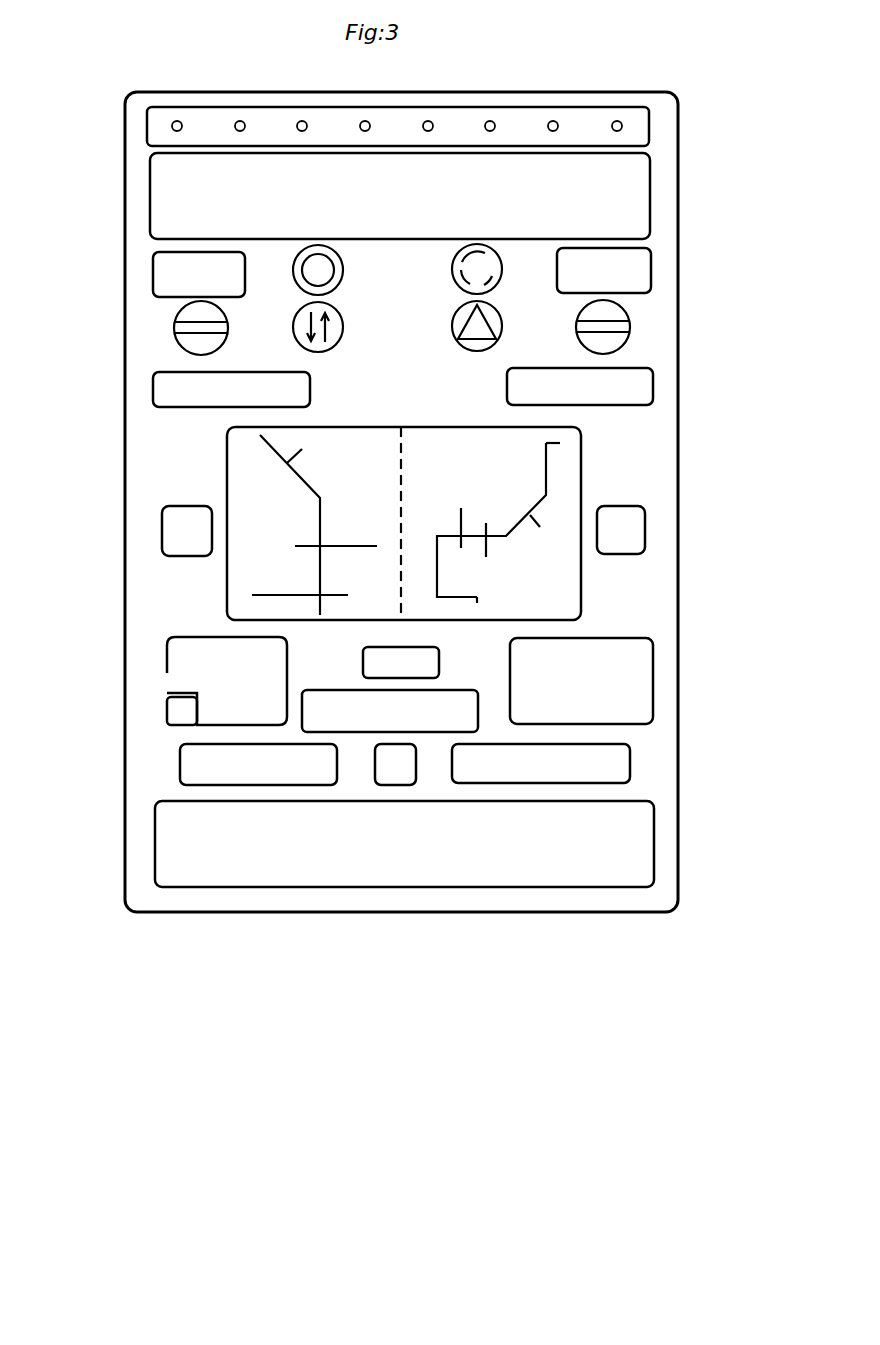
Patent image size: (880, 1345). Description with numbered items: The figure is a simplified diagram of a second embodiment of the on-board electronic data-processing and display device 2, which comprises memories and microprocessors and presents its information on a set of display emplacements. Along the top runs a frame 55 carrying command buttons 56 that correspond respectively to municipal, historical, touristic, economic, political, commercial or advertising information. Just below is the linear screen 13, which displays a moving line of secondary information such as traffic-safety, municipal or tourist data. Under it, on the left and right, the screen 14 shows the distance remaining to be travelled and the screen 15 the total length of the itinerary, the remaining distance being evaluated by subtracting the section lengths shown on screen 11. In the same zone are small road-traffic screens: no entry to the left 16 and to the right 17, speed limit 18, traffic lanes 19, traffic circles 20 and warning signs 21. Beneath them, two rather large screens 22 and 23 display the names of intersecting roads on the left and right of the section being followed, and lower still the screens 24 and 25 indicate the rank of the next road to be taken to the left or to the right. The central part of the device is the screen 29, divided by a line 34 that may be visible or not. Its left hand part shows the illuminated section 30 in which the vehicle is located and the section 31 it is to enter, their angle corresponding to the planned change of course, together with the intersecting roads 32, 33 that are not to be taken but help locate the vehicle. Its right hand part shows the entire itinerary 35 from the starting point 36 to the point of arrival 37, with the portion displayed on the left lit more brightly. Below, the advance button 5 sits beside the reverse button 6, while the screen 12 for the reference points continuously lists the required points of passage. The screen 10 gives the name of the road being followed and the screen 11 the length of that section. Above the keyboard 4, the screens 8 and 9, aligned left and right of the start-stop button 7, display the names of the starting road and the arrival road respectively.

The on-board electronic data-processing and display device 2 is at (125, 567).
The keyboard 4 is at (565, 872).
The advance button 5 is at (183, 648).
The reverse button 6 is at (167, 712).
The start-stop button 7 is at (407, 783).
The screen 8 is at (183, 767).
The screen 9 is at (625, 760).
The screen 10 is at (330, 700).
The screen 11 is at (435, 655).
The screen for the reference points 12 is at (648, 642).
The linear screen 13 is at (640, 181).
The screen 14 is at (157, 270).
The screen 15 is at (655, 265).
The no entry to the left screen 16 is at (178, 313).
The no entry to the right screen 17 is at (625, 333).
The speed limit screen 18 is at (305, 250).
The traffic lanes screen 19 is at (339, 311).
The traffic circles screen 20 is at (456, 257).
The warning signs screen 21 is at (458, 314).
The screen 22 is at (157, 400).
The screen 23 is at (645, 393).
The screen 24 is at (167, 528).
The screen 25 is at (640, 527).
The screen 29 is at (227, 483).
The section 30 is at (318, 606).
The section 31 is at (262, 437).
The intersecting road 32 is at (258, 604).
The intersecting road 33 is at (362, 542).
The line 34 is at (403, 432).
The itinerary 35 is at (548, 474).
The starting point 36 is at (477, 597).
The point of arrival 37 is at (547, 442).
The frame 55 is at (150, 112).
The command buttons 56 is at (243, 124).